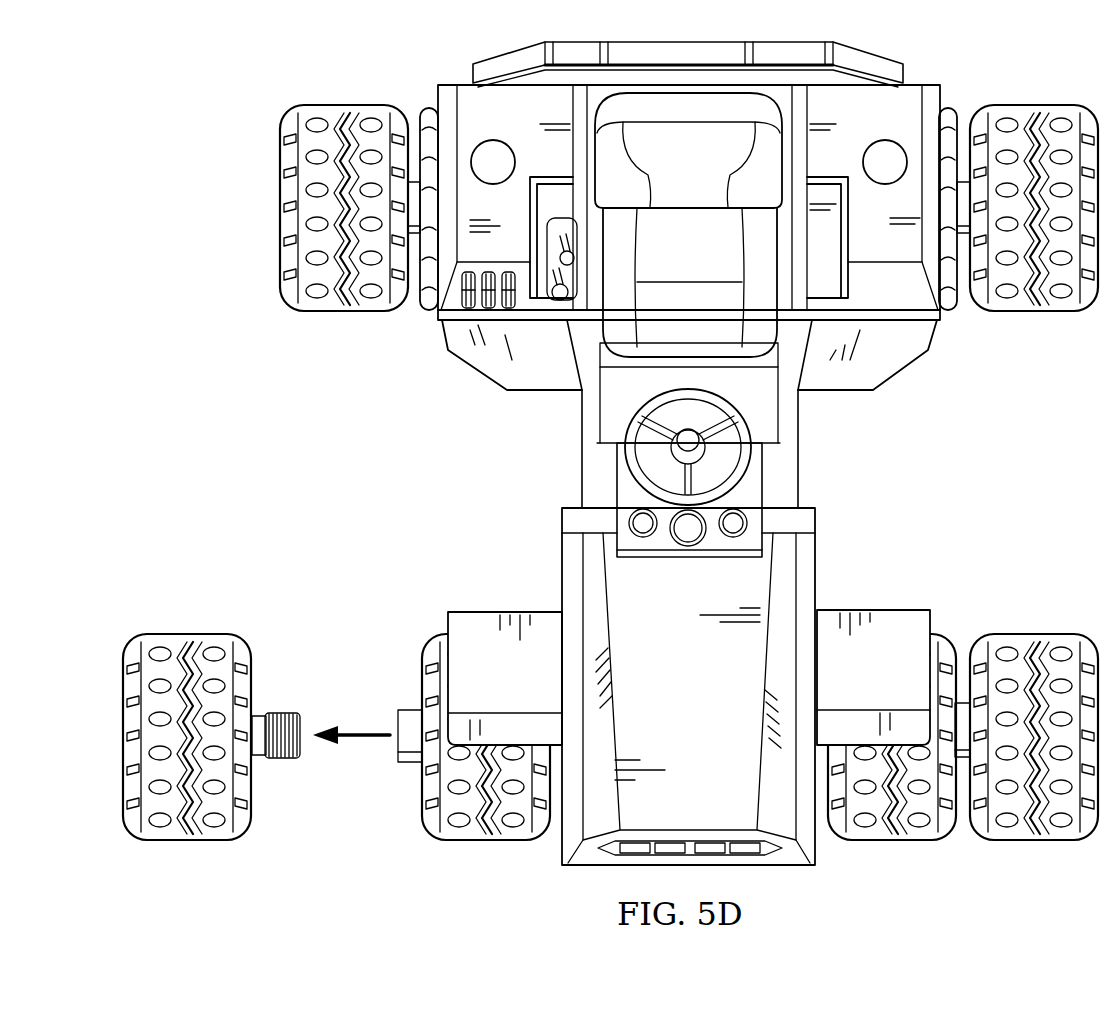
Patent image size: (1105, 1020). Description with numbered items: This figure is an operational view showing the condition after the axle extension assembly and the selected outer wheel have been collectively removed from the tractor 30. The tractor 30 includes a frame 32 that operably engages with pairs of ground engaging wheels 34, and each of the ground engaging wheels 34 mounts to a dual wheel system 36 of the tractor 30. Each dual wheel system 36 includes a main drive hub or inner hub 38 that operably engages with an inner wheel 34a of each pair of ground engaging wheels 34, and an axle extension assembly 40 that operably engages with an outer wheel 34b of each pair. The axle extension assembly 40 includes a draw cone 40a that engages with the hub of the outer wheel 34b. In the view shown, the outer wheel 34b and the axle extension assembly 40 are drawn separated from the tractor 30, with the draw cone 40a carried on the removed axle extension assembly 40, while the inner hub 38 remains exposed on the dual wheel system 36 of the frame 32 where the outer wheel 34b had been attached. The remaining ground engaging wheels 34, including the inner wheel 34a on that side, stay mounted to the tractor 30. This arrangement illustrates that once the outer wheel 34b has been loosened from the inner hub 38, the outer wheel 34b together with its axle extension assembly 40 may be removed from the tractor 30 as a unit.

The tractor 30 is at (226, 52).
The frame 32 is at (800, 458).
The ground engaging wheels 34 is at (610, 474).
The inner wheel 34a is at (472, 842).
The outer wheel 34b is at (175, 842).
The dual wheel system 36 is at (418, 182).
The inner hub 38 is at (403, 708).
The axle extension assembly 40 is at (318, 774).
The draw cone 40a is at (288, 765).